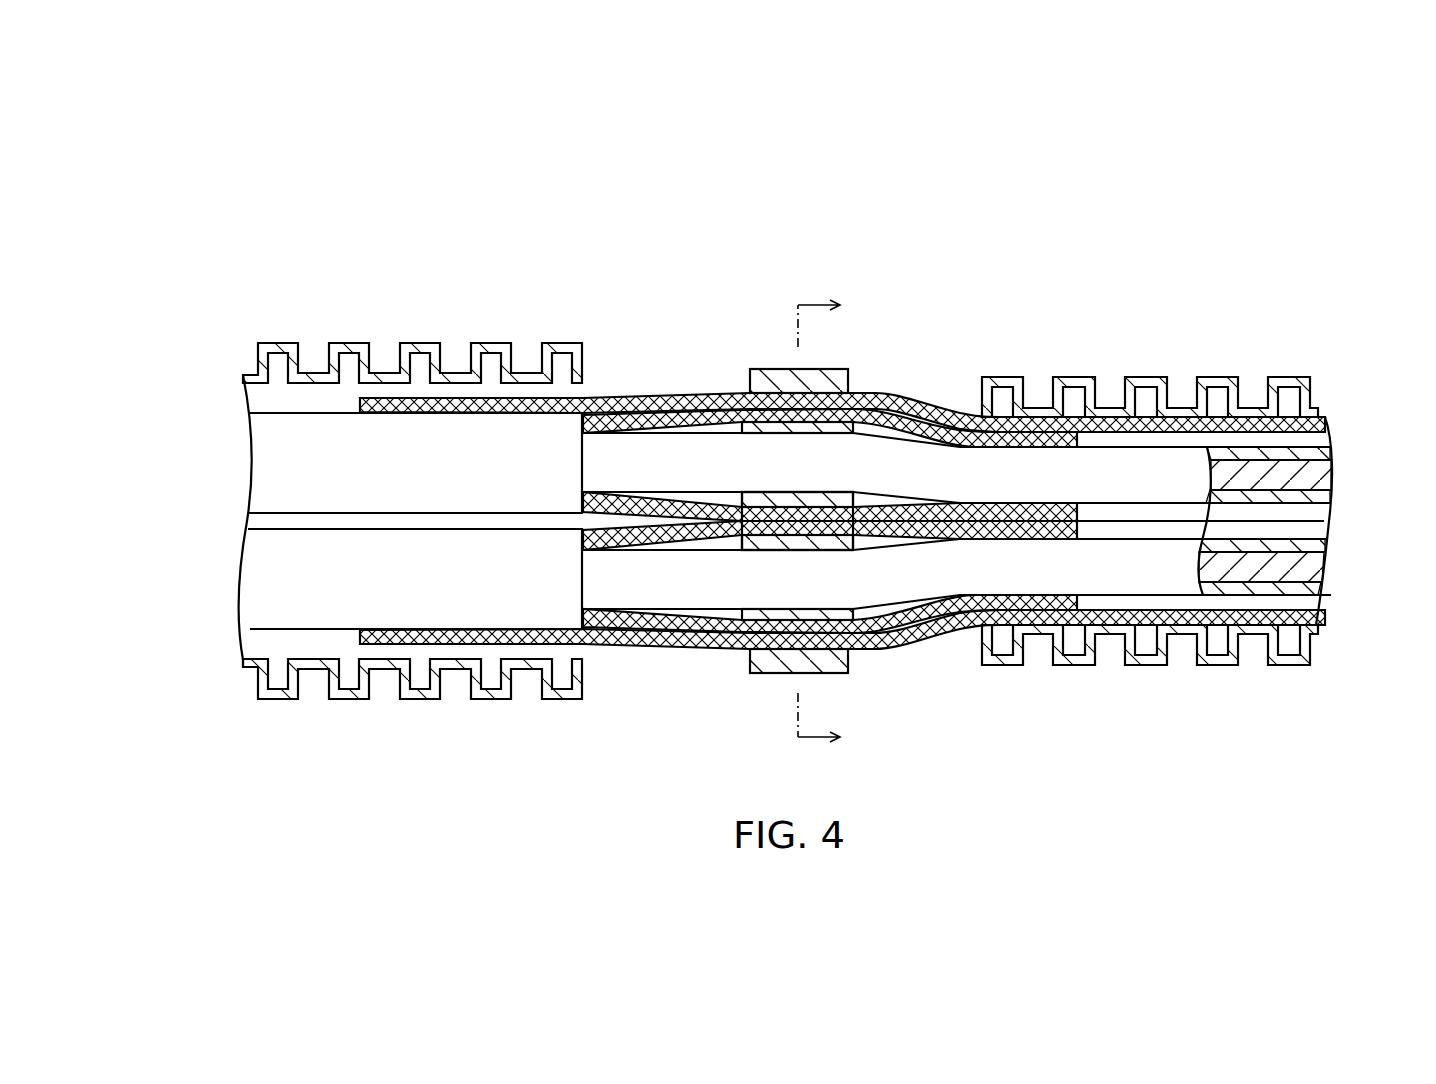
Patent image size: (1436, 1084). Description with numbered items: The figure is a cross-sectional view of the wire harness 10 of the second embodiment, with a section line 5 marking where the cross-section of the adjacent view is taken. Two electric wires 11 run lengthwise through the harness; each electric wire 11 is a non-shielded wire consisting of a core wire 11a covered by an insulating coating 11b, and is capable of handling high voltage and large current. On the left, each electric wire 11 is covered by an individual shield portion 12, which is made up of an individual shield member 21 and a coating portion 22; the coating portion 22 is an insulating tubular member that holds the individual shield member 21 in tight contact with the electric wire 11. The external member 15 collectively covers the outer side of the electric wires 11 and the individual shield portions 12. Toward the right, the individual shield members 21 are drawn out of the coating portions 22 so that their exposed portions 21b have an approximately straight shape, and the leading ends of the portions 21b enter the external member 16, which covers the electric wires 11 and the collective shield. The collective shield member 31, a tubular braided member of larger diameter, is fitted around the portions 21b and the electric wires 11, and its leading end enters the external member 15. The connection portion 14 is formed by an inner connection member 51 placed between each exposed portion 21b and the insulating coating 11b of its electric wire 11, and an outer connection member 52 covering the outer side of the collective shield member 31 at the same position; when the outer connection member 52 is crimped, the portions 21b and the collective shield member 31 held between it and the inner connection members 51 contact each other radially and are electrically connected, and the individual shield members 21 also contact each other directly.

The section line V-V 5 is at (831, 522).
The wire harness 10 is at (1228, 177).
The electric wire 11 is at (1237, 521).
The core wire 11a is at (1328, 480).
The insulating coating 11b is at (1323, 495).
The individual shield portion 12 is at (267, 488).
The connection portion 14 is at (856, 538).
The external member 15 is at (285, 342).
The external member 16 is at (1223, 378).
The individual shield member 21 is at (1015, 445).
The exposed portion 21b is at (705, 425).
The coating portion 22 is at (377, 521).
The collective shield member 31 is at (913, 397).
The inner connection member 51 is at (820, 427).
The outer connection member 52 is at (840, 661).